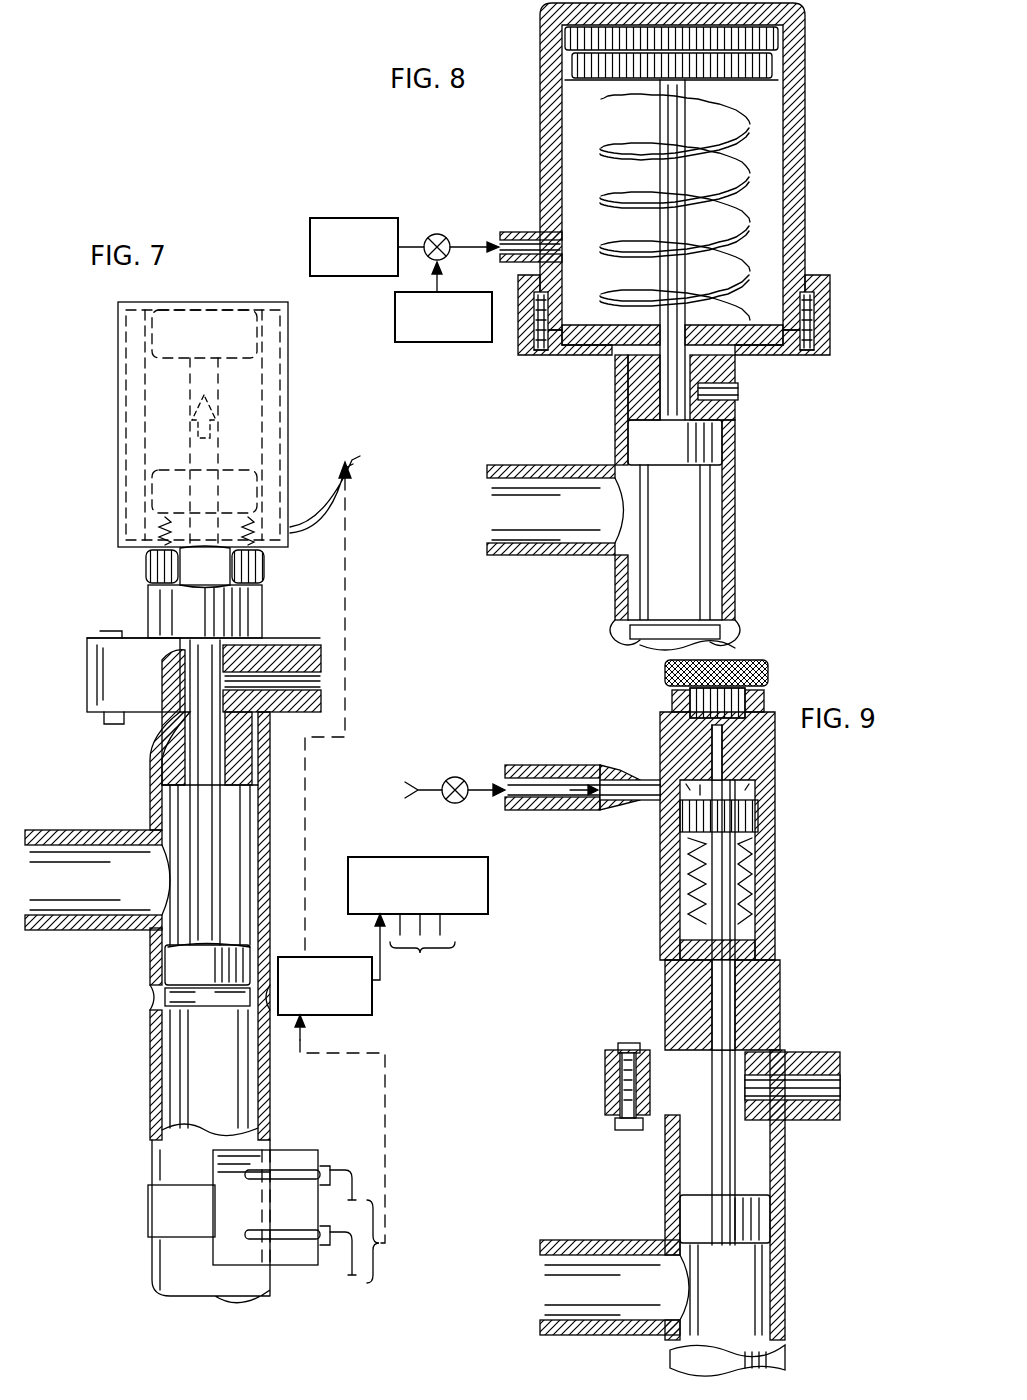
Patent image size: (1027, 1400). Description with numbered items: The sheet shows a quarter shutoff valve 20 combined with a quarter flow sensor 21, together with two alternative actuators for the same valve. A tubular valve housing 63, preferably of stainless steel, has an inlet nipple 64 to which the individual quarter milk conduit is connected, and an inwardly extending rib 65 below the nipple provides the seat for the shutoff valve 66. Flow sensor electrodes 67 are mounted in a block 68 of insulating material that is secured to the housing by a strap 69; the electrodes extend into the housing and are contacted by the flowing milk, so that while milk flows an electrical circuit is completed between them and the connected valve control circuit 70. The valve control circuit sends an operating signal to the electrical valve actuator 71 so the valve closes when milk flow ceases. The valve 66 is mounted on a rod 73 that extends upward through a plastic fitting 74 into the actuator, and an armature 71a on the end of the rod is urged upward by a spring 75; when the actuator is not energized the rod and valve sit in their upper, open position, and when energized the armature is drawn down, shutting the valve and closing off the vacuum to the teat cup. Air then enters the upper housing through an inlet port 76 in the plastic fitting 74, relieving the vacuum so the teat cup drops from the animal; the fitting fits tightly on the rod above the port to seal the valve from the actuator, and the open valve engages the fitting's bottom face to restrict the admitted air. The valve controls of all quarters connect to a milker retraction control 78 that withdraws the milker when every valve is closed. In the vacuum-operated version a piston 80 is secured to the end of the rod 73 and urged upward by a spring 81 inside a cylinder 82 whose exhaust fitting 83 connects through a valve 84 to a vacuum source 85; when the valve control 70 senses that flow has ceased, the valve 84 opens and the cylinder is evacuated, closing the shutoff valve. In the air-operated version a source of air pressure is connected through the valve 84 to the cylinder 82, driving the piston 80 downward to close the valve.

In FIG. 7, the shutoff valve 20 is at (124, 806).
In FIG. 7, the quarter flow sensor 21 is at (62, 1204).
In FIG. 7, the tubular valve housing 63 is at (150, 940).
In FIG. 8, the tubular valve housing 63 is at (737, 520).
In FIG. 9, the tubular valve housing 63 is at (787, 1263).
In FIG. 7, the inlet nipple 64 is at (78, 807).
In FIG. 8, the inlet nipple 64 is at (500, 562).
In FIG. 9, the inlet nipple 64 is at (558, 1241).
In FIG. 7, the inwardly extending rib 65 is at (155, 998).
In FIG. 8, the inwardly extending rib 65 is at (620, 630).
In FIG. 9, the inwardly extending rib 65 is at (785, 1355).
In FIG. 7, the shutoff valve 66 is at (190, 965).
In FIG. 8, the shutoff valve 66 is at (700, 446).
In FIG. 9, the shutoff valve 66 is at (745, 1222).
In FIG. 7, the flow sensor electrodes 67 is at (280, 1170).
In FIG. 7, the block of insulating material 68 is at (228, 1218).
In FIG. 7, the strap 69 is at (160, 1212).
In FIG. 7, the valve control circuit 70 is at (319, 1009).
In FIG. 8, the valve control circuit 70 is at (428, 342).
In FIG. 7, the electrical valve actuator 71 is at (272, 385).
In FIG. 7, the armature 71a is at (158, 490).
In FIG. 7, the rod 73 is at (200, 738).
In FIG. 8, the rod 73 is at (672, 395).
In FIG. 9, the rod 73 is at (725, 1052).
In FIG. 7, the plastic fitting 74 is at (112, 668).
In FIG. 8, the plastic fitting 74 is at (625, 365).
In FIG. 9, the plastic fitting 74 is at (612, 1090).
In FIG. 7, the spring 75 is at (160, 528).
In FIG. 7, the inlet port 76 is at (325, 690).
In FIG. 8, the inlet port 76 is at (756, 387).
In FIG. 9, the inlet port 76 is at (845, 1080).
In FIG. 7, the milker retraction control 78 is at (395, 858).
In FIG. 8, the piston 80 is at (790, 45).
In FIG. 9, the piston 80 is at (760, 815).
In FIG. 8, the spring 81 is at (745, 128).
In FIG. 8, the cylinder 82 is at (805, 216).
In FIG. 9, the cylinder 82 is at (768, 797).
In FIG. 8, the exhaust fitting 83 is at (510, 232).
In FIG. 8, the valve 84 is at (441, 234).
In FIG. 9, the valve 84 is at (463, 778).
In FIG. 8, the vacuum source 85 is at (338, 218).